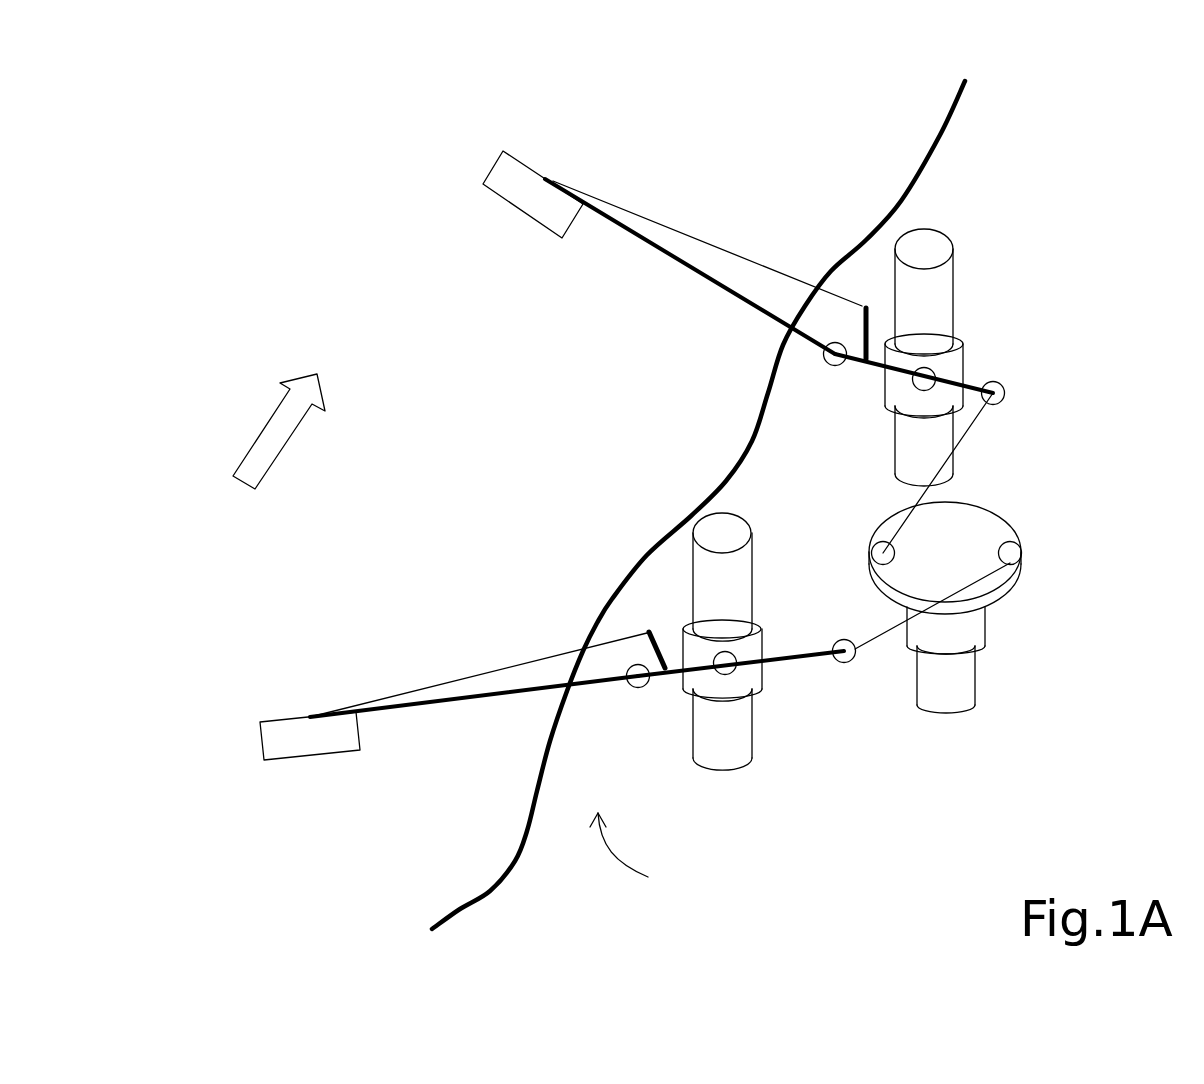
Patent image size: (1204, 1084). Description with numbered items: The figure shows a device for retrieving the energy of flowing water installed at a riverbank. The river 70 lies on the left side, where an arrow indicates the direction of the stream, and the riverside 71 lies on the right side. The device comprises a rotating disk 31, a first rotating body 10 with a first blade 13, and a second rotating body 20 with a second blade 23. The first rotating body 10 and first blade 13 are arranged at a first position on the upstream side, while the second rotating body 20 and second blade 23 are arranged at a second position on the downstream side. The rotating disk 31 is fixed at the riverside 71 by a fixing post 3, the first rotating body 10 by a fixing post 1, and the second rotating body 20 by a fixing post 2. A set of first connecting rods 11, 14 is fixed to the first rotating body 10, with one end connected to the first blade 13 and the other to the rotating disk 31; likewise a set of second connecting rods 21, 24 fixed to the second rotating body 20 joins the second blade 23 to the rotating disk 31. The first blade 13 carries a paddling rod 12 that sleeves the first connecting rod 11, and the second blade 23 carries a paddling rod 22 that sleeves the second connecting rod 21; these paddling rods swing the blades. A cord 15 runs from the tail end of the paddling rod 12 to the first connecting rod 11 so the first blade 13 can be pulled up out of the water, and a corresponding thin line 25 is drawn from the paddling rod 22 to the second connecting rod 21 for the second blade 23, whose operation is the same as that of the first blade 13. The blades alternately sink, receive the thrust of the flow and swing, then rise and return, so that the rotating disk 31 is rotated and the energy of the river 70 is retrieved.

The fixing post 1 is at (722, 772).
The fixing post 2 is at (958, 287).
The fixing post 3 is at (947, 713).
The first rotating body 10 is at (743, 678).
The first connecting rod 11 is at (795, 647).
The paddling rod 12 is at (522, 695).
The first blade 13 is at (312, 757).
The first connecting rod 14 is at (975, 578).
The cord 15 is at (483, 668).
The second rotating body 20 is at (965, 372).
The second connecting rod 21 is at (870, 367).
The paddling rod 22 is at (717, 287).
The second blade 23 is at (520, 157).
The second connecting rod 24 is at (962, 437).
The second link 25 is at (705, 237).
The rotating disk 31 is at (997, 600).
The river 70 is at (363, 302).
The riverside 71 is at (639, 851).